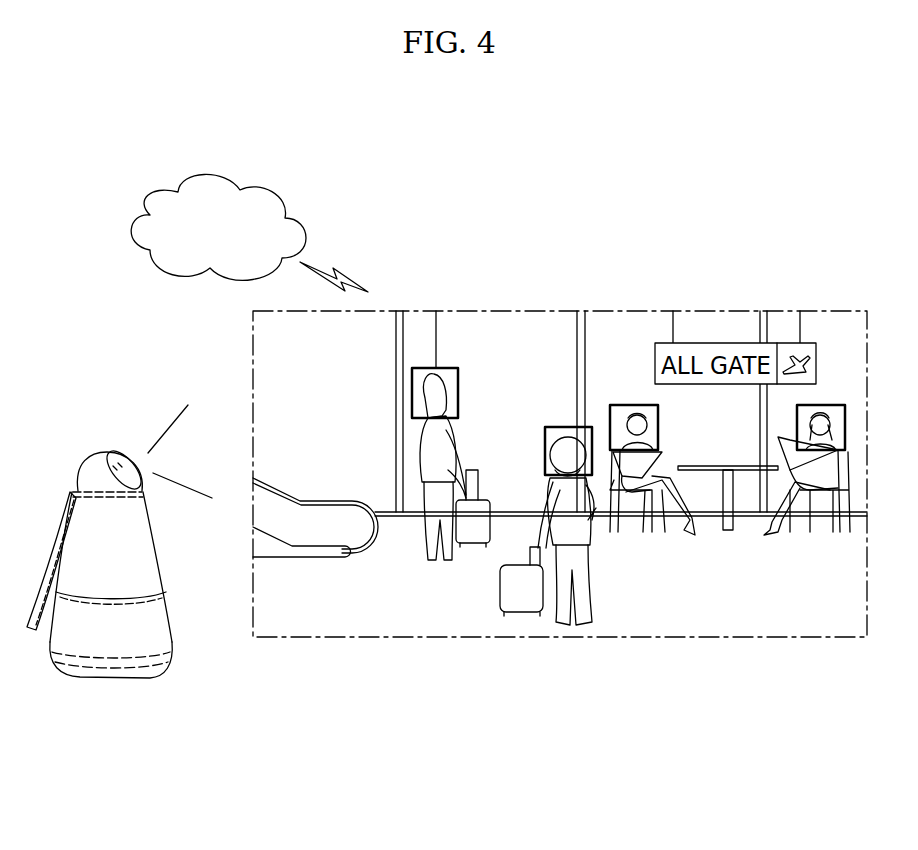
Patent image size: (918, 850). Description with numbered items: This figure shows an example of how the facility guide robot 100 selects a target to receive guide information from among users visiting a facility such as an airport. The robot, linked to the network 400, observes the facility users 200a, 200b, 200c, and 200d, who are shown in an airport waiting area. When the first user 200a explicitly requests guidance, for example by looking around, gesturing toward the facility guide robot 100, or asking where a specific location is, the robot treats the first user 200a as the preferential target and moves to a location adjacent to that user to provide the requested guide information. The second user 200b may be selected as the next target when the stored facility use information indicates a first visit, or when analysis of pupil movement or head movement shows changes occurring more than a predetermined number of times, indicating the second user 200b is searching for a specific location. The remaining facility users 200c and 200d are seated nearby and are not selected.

The facility guide robot 100 is at (108, 680).
The network 400 is at (216, 164).
The user 1 200a is at (430, 563).
The user 2 200b is at (557, 626).
The facility user 200c is at (688, 533).
The facility user 200d is at (770, 533).